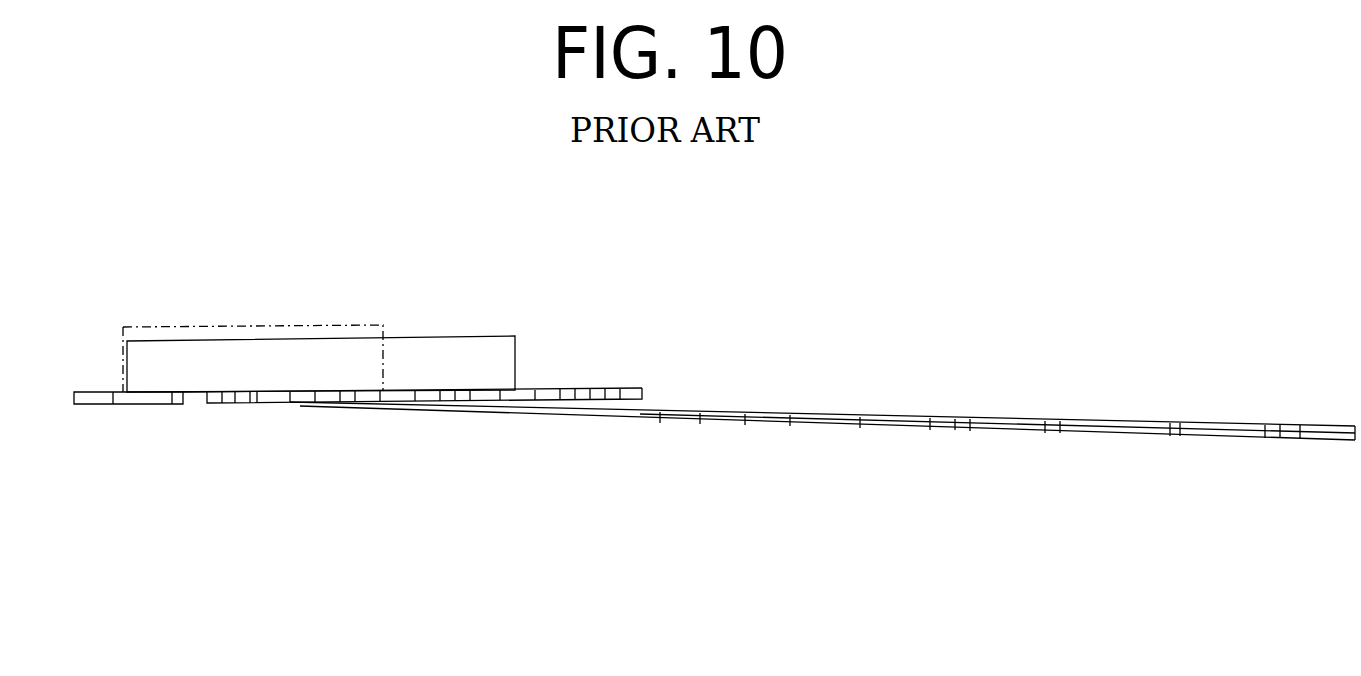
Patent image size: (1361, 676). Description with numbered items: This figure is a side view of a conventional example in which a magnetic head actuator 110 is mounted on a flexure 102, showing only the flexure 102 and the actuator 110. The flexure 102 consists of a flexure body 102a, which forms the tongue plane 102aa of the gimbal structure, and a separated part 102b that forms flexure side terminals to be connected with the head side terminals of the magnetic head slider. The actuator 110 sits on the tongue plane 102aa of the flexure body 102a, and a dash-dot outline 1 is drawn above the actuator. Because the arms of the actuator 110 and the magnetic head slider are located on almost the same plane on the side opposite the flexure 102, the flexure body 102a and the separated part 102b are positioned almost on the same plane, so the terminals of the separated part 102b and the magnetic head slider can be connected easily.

The camera module 1 is at (232, 326).
The magnetic head actuator 110 is at (447, 337).
The flexure 102 is at (711, 434).
The flexure body 102a is at (270, 404).
The separated part 102b is at (100, 404).
The tongue plane 102aa is at (600, 388).